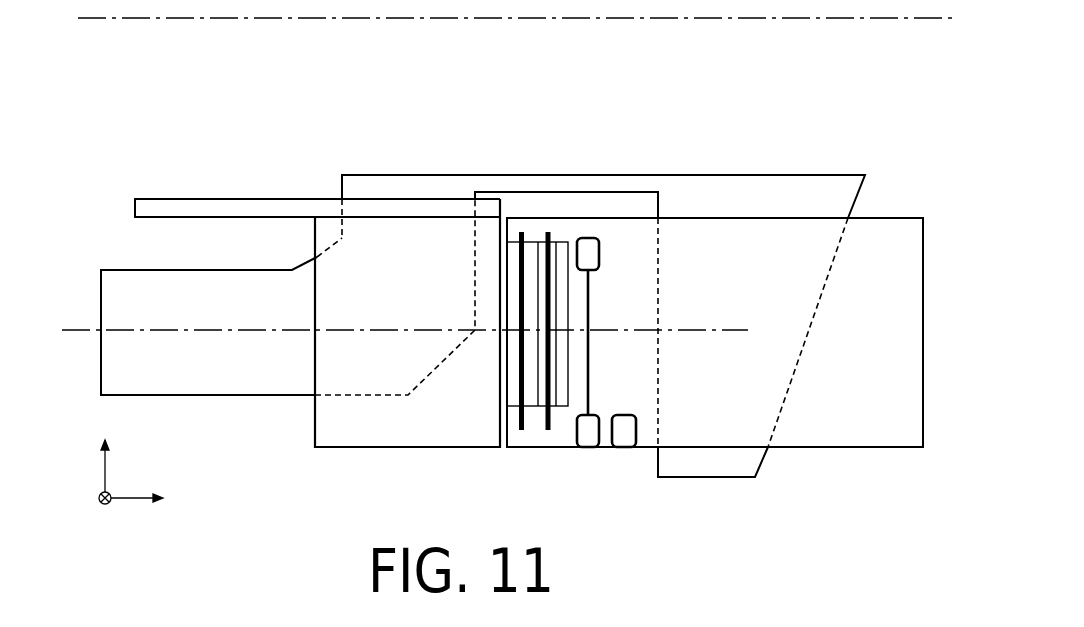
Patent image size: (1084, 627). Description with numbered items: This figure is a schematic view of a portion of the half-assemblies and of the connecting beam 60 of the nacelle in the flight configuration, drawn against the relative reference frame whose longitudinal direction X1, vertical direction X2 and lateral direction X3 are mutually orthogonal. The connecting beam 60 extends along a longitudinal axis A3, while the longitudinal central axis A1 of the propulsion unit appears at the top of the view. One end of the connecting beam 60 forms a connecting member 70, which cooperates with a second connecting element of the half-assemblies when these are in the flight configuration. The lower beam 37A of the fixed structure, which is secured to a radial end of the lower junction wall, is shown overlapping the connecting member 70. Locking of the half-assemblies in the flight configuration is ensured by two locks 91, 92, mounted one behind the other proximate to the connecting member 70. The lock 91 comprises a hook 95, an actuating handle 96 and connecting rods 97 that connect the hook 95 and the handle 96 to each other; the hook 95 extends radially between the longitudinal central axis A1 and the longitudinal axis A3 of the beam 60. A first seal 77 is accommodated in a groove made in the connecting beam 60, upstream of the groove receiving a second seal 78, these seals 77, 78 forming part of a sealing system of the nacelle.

The connecting beam 60 is at (332, 447).
The connecting member 70 is at (560, 235).
The first seal 77 is at (520, 232).
The second seal 78 is at (548, 232).
The lock 91 is at (691, 265).
The hook 95 is at (592, 252).
The actuating handle 96 is at (592, 428).
The connecting rods 97 is at (592, 313).
The lock 92 is at (626, 433).
The lower beam 37A is at (900, 218).
The longitudinal central axis A1 is at (107, 22).
The longitudinal axis A3 is at (74, 330).
The longitudinal direction X1 is at (156, 498).
The vertical direction X2 is at (111, 451).
The lateral direction X3 is at (95, 515).